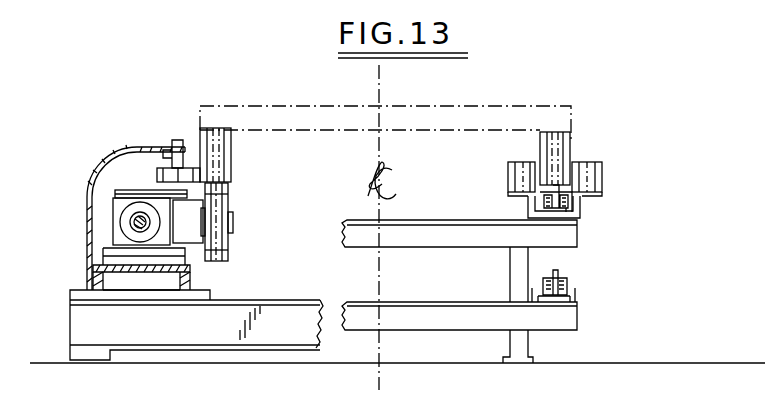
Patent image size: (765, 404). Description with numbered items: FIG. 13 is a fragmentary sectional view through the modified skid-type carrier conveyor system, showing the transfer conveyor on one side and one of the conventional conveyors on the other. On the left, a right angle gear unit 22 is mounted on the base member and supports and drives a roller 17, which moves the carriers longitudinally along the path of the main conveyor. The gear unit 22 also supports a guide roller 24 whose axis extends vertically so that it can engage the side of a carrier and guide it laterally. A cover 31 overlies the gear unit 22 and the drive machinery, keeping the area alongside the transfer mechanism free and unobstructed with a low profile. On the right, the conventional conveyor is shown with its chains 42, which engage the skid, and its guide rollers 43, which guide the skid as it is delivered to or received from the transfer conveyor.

The cover 31 is at (108, 155).
The right angle gear unit 22 is at (118, 217).
The roller 17 is at (230, 250).
The guide roller 24 is at (200, 174).
The guide roller 43 is at (518, 183).
The chain 42 is at (565, 205).